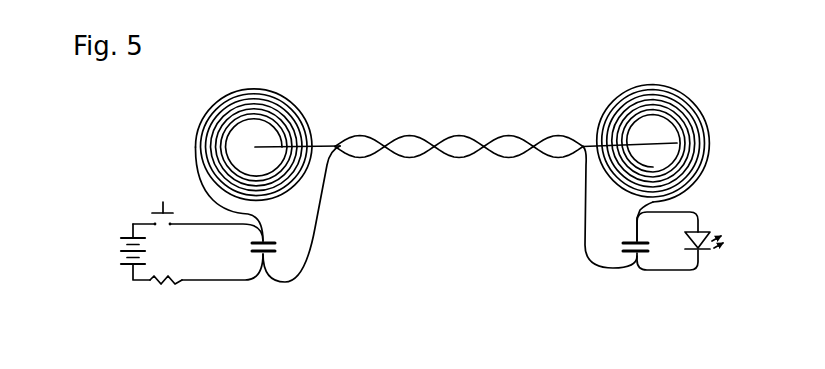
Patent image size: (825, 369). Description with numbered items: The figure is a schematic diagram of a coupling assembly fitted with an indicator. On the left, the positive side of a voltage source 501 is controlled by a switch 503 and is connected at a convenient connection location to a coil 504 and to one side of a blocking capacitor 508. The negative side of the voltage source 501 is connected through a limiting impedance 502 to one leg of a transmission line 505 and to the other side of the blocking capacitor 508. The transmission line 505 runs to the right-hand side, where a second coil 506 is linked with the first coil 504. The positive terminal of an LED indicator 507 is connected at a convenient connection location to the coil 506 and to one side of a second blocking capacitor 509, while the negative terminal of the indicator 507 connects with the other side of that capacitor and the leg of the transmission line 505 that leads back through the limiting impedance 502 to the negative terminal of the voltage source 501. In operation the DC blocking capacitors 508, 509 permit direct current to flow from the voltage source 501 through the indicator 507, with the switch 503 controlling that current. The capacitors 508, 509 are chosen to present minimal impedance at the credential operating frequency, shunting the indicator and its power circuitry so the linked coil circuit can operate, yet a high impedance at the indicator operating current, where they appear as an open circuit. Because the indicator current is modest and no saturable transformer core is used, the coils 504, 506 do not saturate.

The voltage source 501 is at (113, 252).
The limiting impedance 502 is at (165, 291).
The switch 503 is at (159, 190).
The coil 504 is at (198, 128).
The transmission line 505 is at (471, 126).
The coil 506 is at (725, 131).
The LED indicator 507 is at (737, 243).
The blocking capacitor 508 is at (285, 249).
The blocking capacitor 509 is at (611, 247).